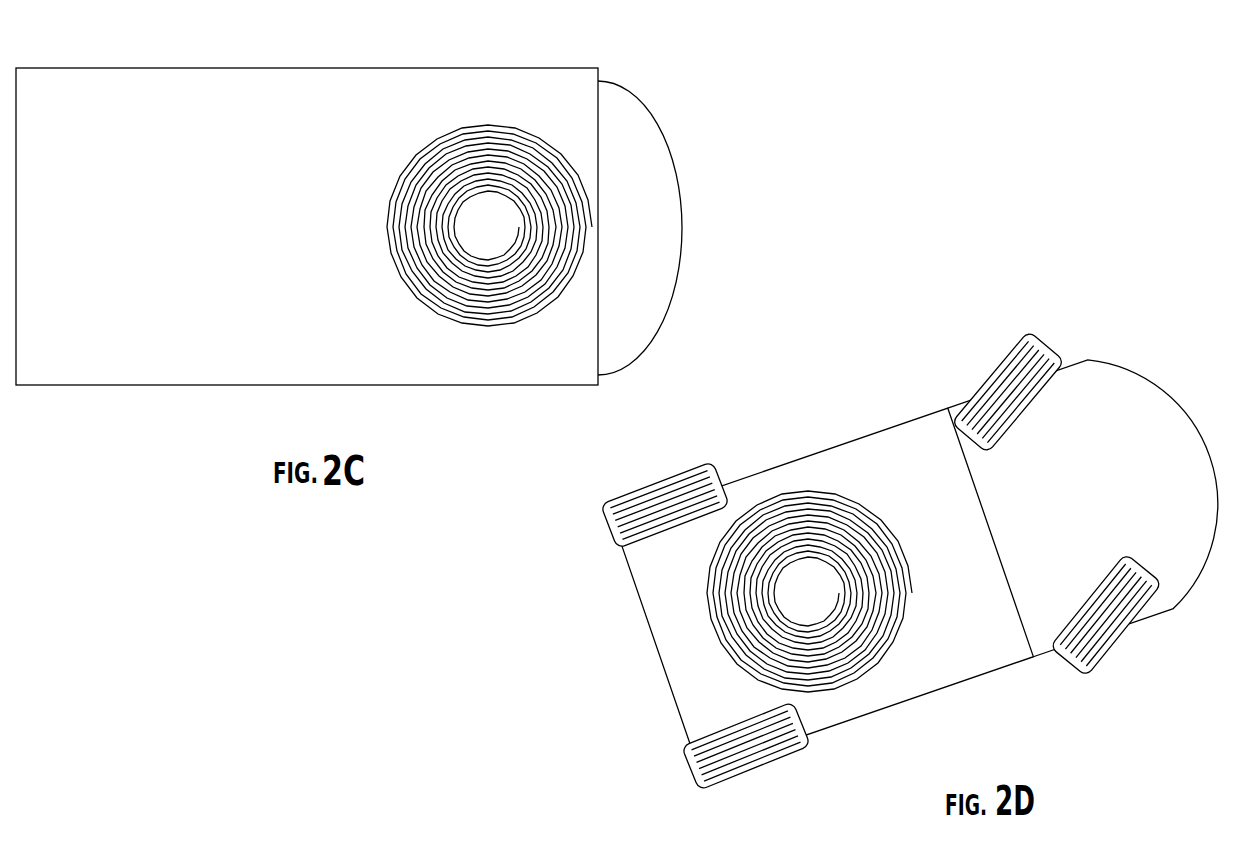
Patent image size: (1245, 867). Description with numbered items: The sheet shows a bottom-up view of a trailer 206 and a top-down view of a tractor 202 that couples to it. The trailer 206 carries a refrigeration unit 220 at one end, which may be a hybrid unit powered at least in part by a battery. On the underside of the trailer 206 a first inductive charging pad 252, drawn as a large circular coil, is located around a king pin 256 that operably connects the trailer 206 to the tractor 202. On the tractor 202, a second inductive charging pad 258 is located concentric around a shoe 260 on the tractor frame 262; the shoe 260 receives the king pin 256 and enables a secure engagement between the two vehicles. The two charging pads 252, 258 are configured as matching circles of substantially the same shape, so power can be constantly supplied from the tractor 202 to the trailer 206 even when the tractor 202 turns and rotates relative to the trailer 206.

In FIG. 2C, the trailer 206 is at (293, 86).
In FIG. 2C, the refrigeration unit 220 is at (668, 185).
In FIG. 2C, the first inductive charging pad 252 is at (488, 315).
In FIG. 2C, the king pin 256 is at (481, 227).
In FIG. 2D, the tractor 202 is at (1133, 380).
In FIG. 2D, the second inductive charging pad 258 is at (877, 518).
In FIG. 2D, the shoe 260 is at (795, 592).
In FIG. 2D, the tractor frame 262 is at (925, 670).